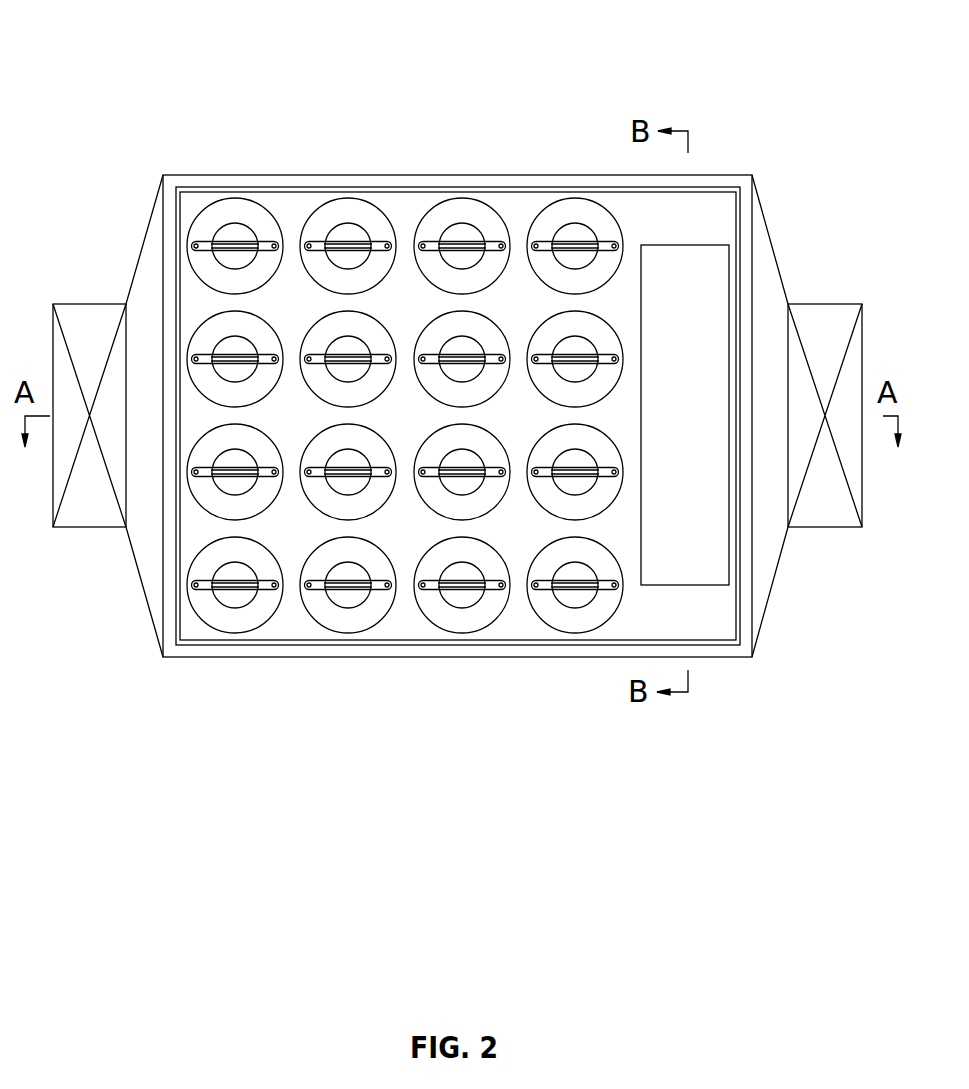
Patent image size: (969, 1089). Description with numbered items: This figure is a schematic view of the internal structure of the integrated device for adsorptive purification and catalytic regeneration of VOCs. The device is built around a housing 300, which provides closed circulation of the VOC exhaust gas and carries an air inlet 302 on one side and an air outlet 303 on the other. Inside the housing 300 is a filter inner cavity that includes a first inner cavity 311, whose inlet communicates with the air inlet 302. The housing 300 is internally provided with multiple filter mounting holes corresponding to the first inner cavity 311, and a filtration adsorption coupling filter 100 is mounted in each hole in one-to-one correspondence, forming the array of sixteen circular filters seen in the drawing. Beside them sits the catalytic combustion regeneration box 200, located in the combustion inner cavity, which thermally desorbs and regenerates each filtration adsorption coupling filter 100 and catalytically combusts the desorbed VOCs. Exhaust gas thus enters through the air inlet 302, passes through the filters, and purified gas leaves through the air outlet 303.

The filtration adsorption coupling filter 100 is at (596, 245).
The catalytic combustion regeneration box 200 is at (697, 253).
The housing 300 is at (455, 175).
The air inlet 302 is at (117, 332).
The air outlet 303 is at (855, 358).
The first inner cavity 311 is at (426, 199).